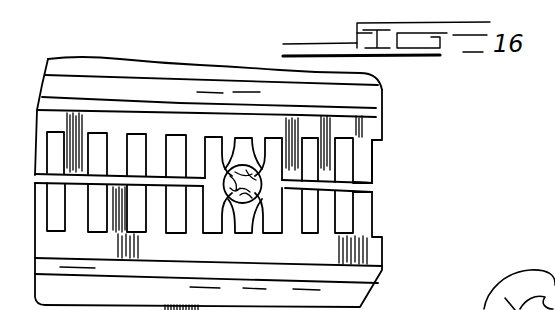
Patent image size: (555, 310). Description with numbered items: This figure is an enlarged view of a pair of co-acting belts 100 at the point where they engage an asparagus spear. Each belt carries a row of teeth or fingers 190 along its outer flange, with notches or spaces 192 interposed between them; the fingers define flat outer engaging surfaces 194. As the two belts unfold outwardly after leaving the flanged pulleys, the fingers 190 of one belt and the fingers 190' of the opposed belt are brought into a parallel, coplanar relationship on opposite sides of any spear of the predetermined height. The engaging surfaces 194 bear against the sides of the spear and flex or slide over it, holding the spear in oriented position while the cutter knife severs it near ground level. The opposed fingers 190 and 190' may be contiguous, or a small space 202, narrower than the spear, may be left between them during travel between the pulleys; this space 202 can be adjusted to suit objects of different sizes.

The contact strip 100 is at (205, 160).
The teeth or fingers 190 is at (207, 209).
The fingers 190' is at (390, 149).
The notches or spaces 192 is at (97, 146).
The flat outer engaging surfaces 194 is at (284, 191).
The space 202 is at (368, 189).